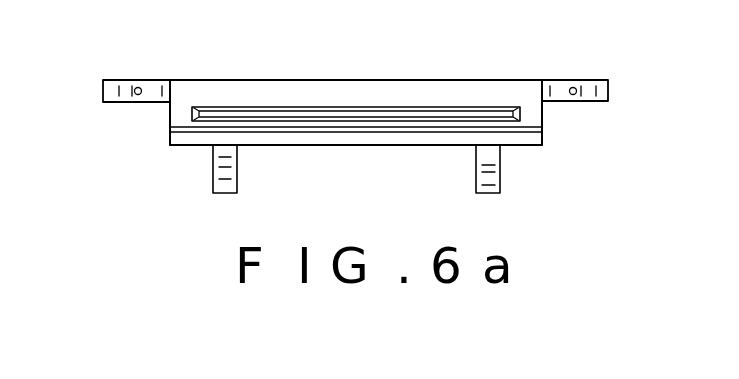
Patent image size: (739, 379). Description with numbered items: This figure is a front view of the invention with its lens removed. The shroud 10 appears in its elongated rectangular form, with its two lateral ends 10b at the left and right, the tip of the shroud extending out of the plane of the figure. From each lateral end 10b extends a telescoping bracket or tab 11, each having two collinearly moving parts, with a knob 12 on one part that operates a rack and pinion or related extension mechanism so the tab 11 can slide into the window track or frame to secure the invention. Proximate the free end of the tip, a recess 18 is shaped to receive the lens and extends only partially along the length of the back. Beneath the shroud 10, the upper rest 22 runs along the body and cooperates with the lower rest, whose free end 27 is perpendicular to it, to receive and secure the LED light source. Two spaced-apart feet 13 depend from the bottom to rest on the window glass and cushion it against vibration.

The shroud 10 is at (291, 80).
The lateral ends 10b is at (170, 108).
The telescoping bracket or tab 11 is at (103, 90).
The knob 12 is at (138, 87).
The feet 13 is at (220, 193).
The recess 18 is at (400, 116).
The upper rest 22 is at (162, 128).
The free end of lower rest 27 is at (190, 150).